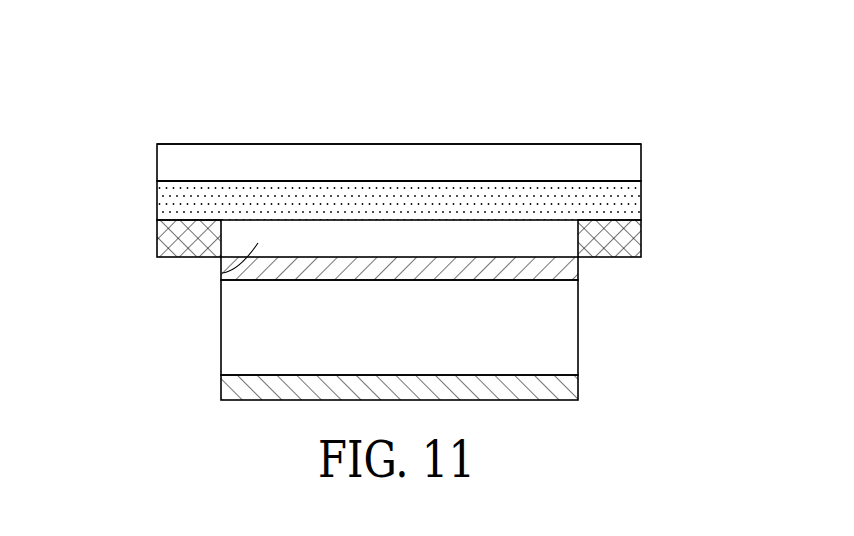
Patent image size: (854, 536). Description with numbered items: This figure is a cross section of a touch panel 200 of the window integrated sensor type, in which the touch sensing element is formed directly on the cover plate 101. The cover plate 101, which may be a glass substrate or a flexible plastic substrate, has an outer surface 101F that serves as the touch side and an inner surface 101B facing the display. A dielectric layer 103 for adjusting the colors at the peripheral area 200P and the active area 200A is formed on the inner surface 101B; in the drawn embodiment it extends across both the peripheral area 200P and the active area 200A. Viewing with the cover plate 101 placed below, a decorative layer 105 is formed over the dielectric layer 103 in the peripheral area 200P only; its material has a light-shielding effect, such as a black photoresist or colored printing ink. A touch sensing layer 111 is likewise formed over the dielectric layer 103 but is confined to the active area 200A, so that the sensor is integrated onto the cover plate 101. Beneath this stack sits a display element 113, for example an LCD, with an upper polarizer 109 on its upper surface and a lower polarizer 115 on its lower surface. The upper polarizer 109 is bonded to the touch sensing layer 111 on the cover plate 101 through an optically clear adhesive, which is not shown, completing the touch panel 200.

The touch panel 200 is at (675, 68).
The peripheral area 200P is at (157, 144).
The active area 200A is at (578, 220).
The cover plate 101 is at (640, 163).
The outer surface 101F is at (187, 142).
The inner surface 101B is at (187, 183).
The dielectric layer 103 is at (640, 200).
The decorative layer 105 is at (157, 226).
The upper polarizer 109 is at (568, 272).
The touch sensing layer 111 is at (222, 273).
The display element 113 is at (570, 328).
The lower polarizer 115 is at (570, 388).